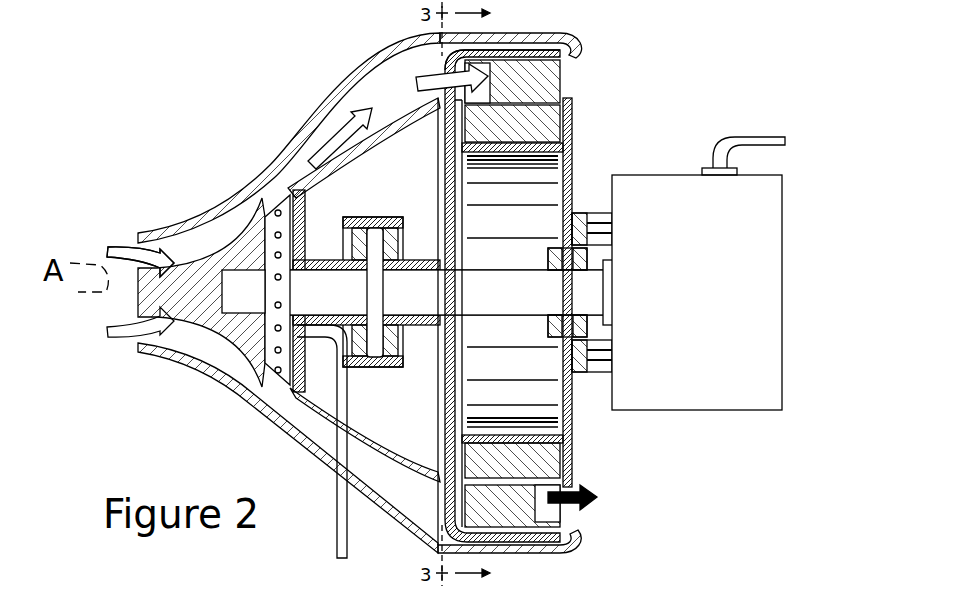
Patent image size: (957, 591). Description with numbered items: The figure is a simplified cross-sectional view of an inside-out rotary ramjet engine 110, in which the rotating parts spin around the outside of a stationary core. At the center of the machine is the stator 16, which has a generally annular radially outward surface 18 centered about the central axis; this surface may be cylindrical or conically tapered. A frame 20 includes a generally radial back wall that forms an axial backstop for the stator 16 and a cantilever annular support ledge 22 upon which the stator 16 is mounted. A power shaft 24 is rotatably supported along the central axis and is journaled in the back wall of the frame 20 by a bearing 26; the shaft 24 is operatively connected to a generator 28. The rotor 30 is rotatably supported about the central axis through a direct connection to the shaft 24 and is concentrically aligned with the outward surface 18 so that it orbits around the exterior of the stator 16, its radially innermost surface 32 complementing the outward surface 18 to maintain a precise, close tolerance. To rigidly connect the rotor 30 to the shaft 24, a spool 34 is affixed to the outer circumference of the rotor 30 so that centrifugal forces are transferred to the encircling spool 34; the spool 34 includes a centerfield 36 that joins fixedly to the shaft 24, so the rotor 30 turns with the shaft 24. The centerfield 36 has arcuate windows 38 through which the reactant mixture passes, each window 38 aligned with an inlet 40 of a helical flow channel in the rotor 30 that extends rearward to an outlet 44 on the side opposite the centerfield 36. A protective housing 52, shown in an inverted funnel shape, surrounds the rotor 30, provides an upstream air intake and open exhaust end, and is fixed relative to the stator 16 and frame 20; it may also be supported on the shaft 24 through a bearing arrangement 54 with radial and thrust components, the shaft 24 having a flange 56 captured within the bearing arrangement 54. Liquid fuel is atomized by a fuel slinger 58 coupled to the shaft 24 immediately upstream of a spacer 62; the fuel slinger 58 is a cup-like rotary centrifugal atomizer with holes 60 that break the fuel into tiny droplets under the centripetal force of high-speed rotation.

The rotary ramjet engine 110 is at (253, 125).
The protective housing 52 is at (253, 181).
The fuel slinger 58 is at (258, 377).
The holes 60 is at (278, 328).
The flange 56 is at (362, 325).
The bearing arrangement 54 is at (386, 272).
The spacer 62 is at (337, 157).
The arcuate windows 38 is at (442, 90).
The inlet 40 is at (447, 63).
The rotor 30 is at (566, 61).
The radially outward surface 18 is at (527, 105).
The stator 16 is at (558, 125).
The frame 20 is at (572, 162).
The cantilever annular support ledge 22 is at (517, 153).
The power shaft 24 is at (528, 317).
The bearing 26 is at (545, 262).
The generator 28 is at (707, 414).
The radially innermost surface 32 is at (517, 481).
The outlet 44 is at (560, 518).
The spool 34 is at (513, 543).
The centerfield 36 is at (445, 500).